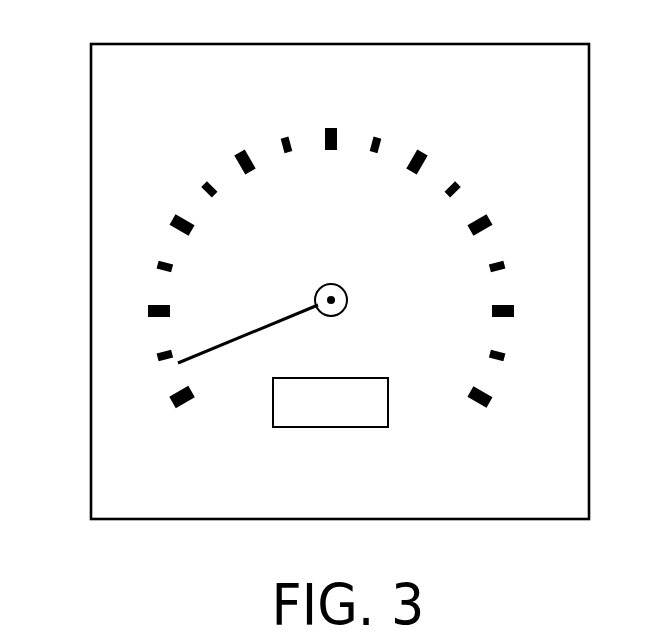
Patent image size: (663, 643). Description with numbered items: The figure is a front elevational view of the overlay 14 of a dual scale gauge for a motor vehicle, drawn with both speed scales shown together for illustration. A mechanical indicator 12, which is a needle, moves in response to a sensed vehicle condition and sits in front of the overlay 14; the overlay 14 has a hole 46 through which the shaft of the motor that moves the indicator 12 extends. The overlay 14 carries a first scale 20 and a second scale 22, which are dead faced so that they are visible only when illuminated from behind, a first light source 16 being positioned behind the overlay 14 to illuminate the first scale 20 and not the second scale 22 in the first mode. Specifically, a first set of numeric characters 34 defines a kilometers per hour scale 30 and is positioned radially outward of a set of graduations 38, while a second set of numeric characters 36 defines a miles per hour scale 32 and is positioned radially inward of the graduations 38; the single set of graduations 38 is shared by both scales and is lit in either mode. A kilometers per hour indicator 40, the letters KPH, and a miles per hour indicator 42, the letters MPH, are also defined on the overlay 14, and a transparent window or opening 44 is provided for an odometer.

The mechanical indicator 12 is at (273, 322).
The overlay 14 is at (155, 60).
The first light source 16 is at (313, 10).
The first scale 20 is at (135, 181).
The second scale 22 is at (457, 219).
The kilometers per hour scale 30 is at (532, 445).
The miles per hour scale 32 is at (450, 408).
The first set of numeric characters 34 is at (352, 77).
The second set of numeric characters 36 is at (297, 212).
The set of graduations 38 is at (186, 416).
The kilometers per hour indicator 40 is at (292, 453).
The miles per hour indicator 42 is at (374, 356).
The opening 44 is at (372, 412).
The hole 46 is at (345, 293).